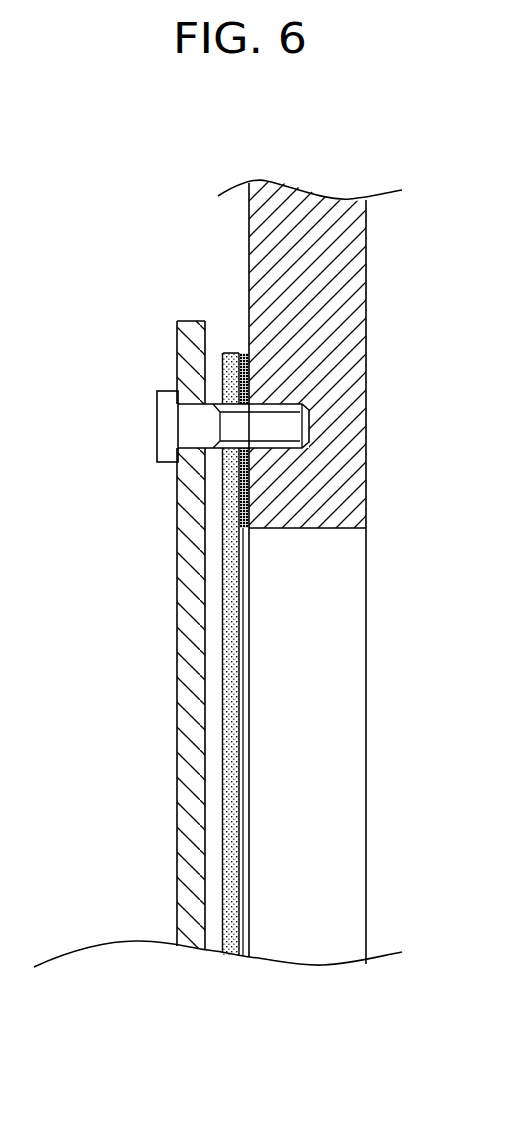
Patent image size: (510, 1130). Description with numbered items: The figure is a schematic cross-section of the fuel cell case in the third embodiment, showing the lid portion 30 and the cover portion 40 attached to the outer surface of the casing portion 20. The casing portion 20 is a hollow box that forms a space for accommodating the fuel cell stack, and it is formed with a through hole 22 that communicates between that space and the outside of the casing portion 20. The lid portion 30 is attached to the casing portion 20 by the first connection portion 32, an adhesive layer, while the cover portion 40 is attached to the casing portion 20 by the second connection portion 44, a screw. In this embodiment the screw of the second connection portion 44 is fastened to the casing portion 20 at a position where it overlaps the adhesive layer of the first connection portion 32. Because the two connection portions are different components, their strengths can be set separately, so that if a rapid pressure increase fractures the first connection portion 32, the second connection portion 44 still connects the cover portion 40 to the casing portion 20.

The casing portion 20 is at (249, 268).
The through hole 22 is at (316, 740).
The lid portion 30 is at (230, 484).
The first connection portion 32 is at (240, 514).
The cover portion 40 is at (177, 379).
The second connection portion 44 is at (157, 427).